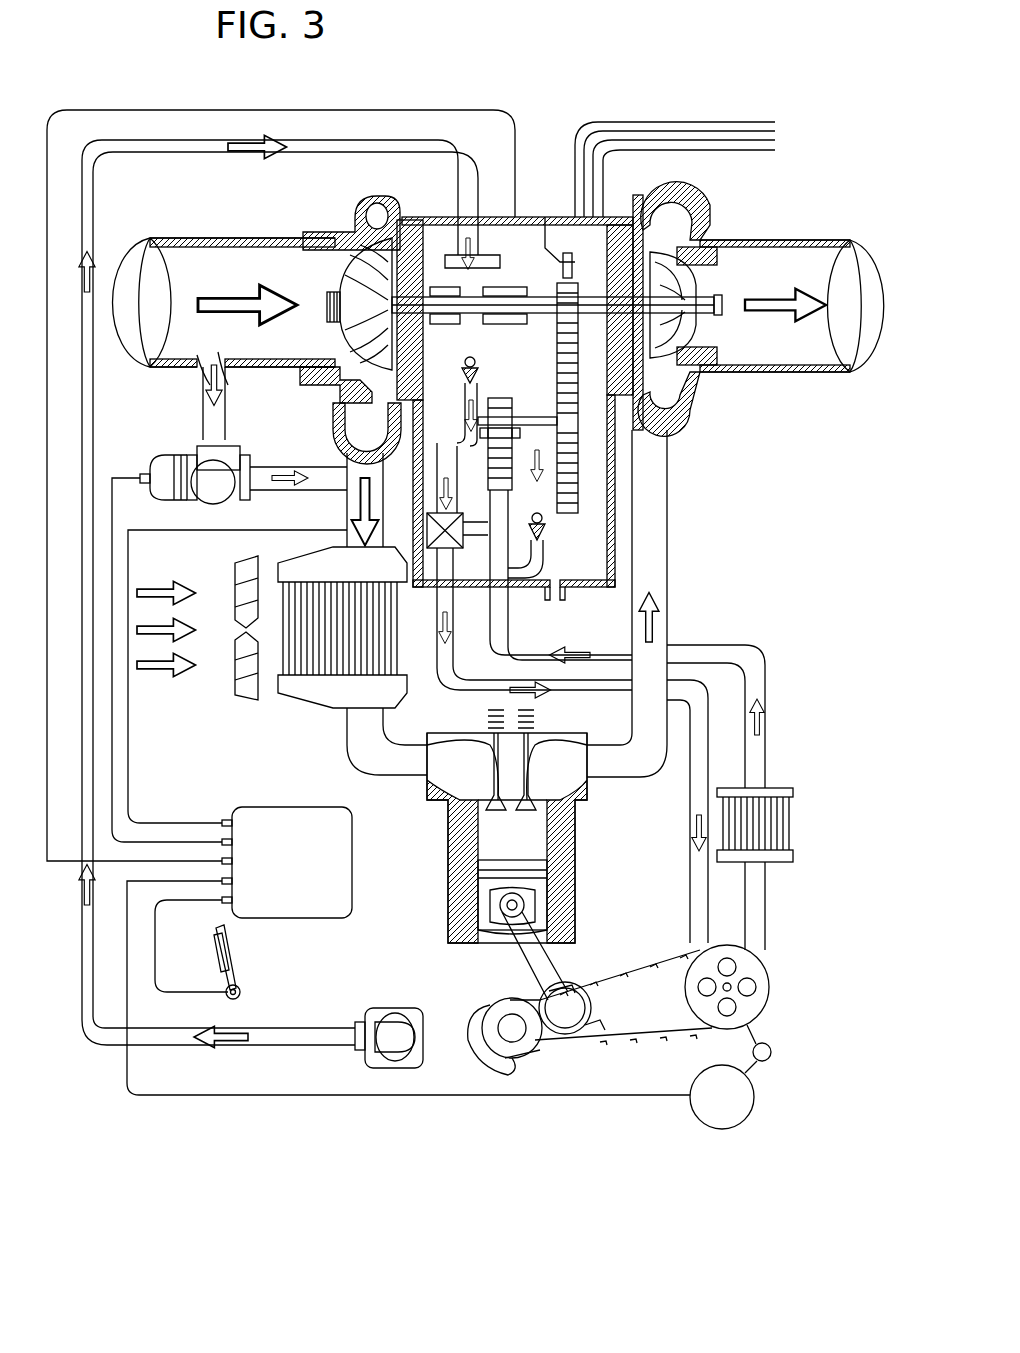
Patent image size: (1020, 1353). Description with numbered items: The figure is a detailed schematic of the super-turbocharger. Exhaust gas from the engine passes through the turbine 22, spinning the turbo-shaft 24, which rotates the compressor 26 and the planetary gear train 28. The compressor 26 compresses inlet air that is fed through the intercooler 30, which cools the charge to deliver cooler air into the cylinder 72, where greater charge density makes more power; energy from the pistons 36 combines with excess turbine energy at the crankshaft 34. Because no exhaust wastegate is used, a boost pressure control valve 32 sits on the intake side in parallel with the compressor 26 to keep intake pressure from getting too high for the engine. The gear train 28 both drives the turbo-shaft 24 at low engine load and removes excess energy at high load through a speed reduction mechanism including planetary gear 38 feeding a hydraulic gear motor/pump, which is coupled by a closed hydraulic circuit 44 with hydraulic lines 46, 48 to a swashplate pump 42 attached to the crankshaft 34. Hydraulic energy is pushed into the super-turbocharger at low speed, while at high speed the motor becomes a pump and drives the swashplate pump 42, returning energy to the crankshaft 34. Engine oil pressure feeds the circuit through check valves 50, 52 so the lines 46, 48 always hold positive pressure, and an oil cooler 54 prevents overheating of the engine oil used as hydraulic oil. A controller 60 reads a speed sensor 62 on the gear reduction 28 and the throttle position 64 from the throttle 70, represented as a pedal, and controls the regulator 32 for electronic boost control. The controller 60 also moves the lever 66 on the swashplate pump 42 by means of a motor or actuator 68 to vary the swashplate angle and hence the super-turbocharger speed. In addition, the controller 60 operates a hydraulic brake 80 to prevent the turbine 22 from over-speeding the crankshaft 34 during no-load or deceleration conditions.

The turbocharger turbine 22 is at (728, 162).
The turbo-shaft 24 is at (430, 297).
The turbocharger compressor 26 is at (340, 200).
The planetary gear train 28 is at (590, 432).
The intercooler 30 is at (233, 715).
The boost pressure control valve 32 is at (195, 455).
The crankshaft 34 is at (505, 1053).
The piston 36 is at (548, 907).
The planetary gear 38 is at (578, 475).
The swashplate pump 42 is at (777, 955).
The hydraulic circuit 44 is at (777, 722).
The hydraulic line 46 is at (717, 650).
The hydraulic line 48 is at (703, 796).
The check valve 50 is at (470, 370).
The check valve 52 is at (548, 514).
The oil cooler 54 is at (783, 818).
The controller 60 is at (345, 852).
The speed sensor 62 is at (547, 248).
The throttle position 64 is at (252, 990).
The lever 66 is at (773, 1050).
The motor or actuator 68 is at (753, 1097).
The throttle 70 is at (235, 950).
The cylinder 72 is at (540, 835).
The hydraulic brake 80 is at (427, 520).